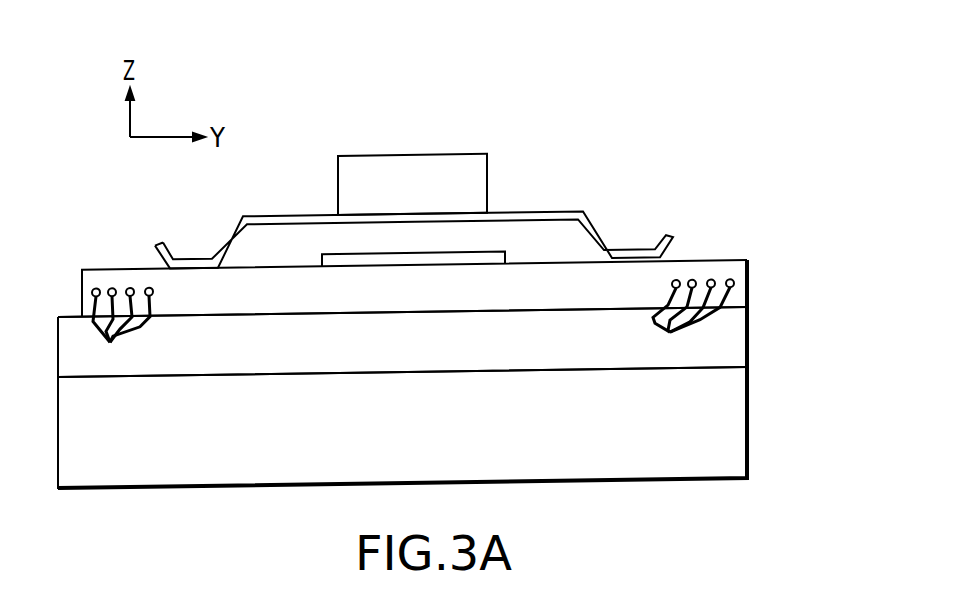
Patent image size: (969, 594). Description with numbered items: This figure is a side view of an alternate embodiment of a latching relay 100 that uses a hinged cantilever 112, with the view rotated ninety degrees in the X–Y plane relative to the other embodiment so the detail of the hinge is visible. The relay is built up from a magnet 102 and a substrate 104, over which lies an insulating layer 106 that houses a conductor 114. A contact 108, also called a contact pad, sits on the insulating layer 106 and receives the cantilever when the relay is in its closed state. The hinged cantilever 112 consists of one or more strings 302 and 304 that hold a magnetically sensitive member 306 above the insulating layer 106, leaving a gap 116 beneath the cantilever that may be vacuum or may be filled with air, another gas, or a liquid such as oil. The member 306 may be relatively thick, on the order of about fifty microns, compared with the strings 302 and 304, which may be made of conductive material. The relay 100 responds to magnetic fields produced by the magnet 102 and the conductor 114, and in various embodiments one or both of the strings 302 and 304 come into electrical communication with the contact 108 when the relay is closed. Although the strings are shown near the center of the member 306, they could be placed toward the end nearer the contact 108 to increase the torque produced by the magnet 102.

The latching relay 100 is at (633, 94).
The magnet 102 is at (479, 436).
The substrate 104 is at (479, 348).
The insulating layer 106 is at (745, 301).
The contact 108 is at (382, 251).
The hinged cantilever 112 is at (753, 145).
The conductor 114 is at (413, 326).
The gap 116 is at (286, 257).
The string 302 is at (228, 244).
The string 304 is at (600, 245).
The magnetically sensitive member 306 is at (443, 163).